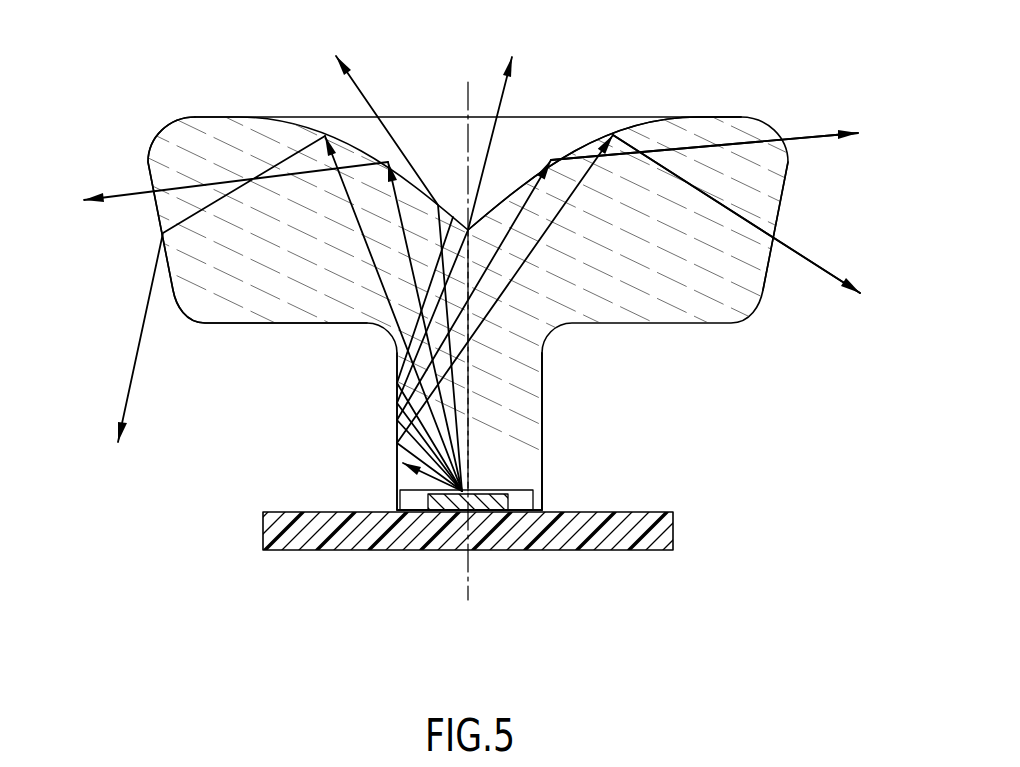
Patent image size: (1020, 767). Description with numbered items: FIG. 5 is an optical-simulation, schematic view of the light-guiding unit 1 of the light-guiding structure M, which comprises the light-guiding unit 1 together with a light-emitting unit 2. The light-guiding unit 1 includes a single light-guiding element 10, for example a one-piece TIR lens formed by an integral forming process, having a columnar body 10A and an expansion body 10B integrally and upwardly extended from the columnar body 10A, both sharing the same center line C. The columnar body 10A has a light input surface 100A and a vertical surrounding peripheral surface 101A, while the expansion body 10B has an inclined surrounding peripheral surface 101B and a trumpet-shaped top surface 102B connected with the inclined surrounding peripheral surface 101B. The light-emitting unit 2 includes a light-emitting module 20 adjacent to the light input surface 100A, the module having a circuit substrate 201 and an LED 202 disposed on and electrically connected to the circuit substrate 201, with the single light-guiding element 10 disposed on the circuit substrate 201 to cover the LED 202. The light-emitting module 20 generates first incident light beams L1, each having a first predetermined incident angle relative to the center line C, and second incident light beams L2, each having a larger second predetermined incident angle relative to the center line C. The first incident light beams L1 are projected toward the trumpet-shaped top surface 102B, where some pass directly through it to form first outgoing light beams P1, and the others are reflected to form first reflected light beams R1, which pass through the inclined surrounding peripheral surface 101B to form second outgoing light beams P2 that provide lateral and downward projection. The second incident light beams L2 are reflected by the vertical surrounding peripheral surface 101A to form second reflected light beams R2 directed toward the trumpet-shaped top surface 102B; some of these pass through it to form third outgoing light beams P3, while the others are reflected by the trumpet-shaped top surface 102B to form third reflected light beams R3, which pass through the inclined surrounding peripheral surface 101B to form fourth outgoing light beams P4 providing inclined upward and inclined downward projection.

The light-guiding unit 1 is at (513, 287).
The single light-guiding element 10 is at (296, 380).
The columnar body 10A is at (397, 424).
The expansion body 10B is at (332, 283).
The light input surface 100A is at (413, 495).
The vertical surrounding peripheral surface 101A is at (525, 399).
The inclined surrounding peripheral surface 101B is at (782, 212).
The trumpet-shaped top surface 102B is at (581, 146).
The light-guiding structure M is at (847, 56).
The center line C is at (474, 578).
The first incident light beams L1 is at (474, 380).
The second incident light beams L2 is at (400, 466).
The first reflected light beams R1 is at (400, 218).
The second reflected light beams R2 is at (569, 193).
The third reflected light beams R3 is at (707, 143).
The first outgoing light beams P1 is at (389, 254).
The second outgoing light beams P2 is at (213, 314).
The third outgoing light beams P3 is at (463, 254).
The fourth outgoing light beams P4 is at (724, 214).
The light-emitting module 20 is at (535, 481).
The circuit substrate 201 is at (537, 537).
The LED 202 is at (490, 490).
The light-emitting unit 2 is at (682, 541).